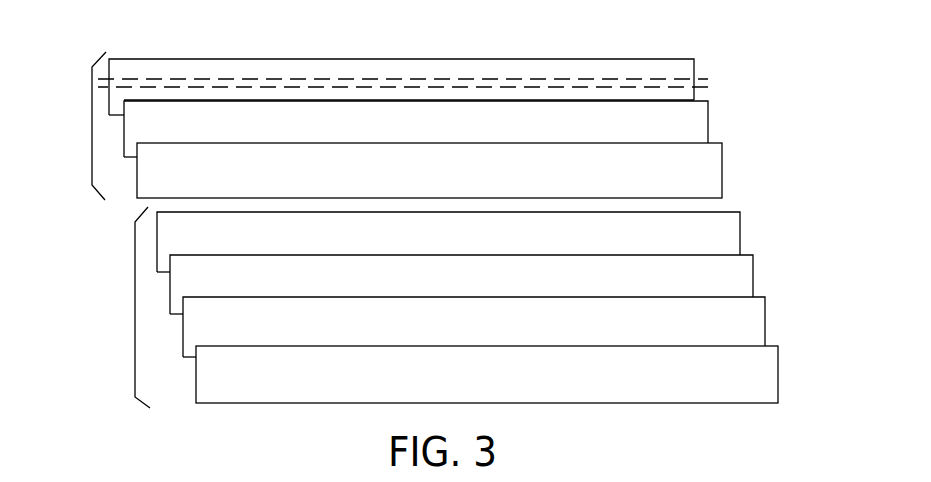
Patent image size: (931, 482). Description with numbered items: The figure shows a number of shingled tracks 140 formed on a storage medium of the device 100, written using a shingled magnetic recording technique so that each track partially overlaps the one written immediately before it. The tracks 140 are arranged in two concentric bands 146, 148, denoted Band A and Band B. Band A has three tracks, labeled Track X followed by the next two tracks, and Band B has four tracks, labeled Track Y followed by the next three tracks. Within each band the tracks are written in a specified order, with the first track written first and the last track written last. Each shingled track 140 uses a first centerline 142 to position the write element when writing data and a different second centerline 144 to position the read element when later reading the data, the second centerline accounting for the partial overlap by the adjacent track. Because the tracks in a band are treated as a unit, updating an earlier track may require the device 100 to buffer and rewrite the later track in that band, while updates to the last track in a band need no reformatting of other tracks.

The device 100 is at (674, 396).
The adjacent tracks 140 is at (613, 65).
The first centerline 142 is at (283, 86).
The second centerline 144 is at (383, 78).
The band 146 is at (100, 22).
The band 148 is at (100, 238).